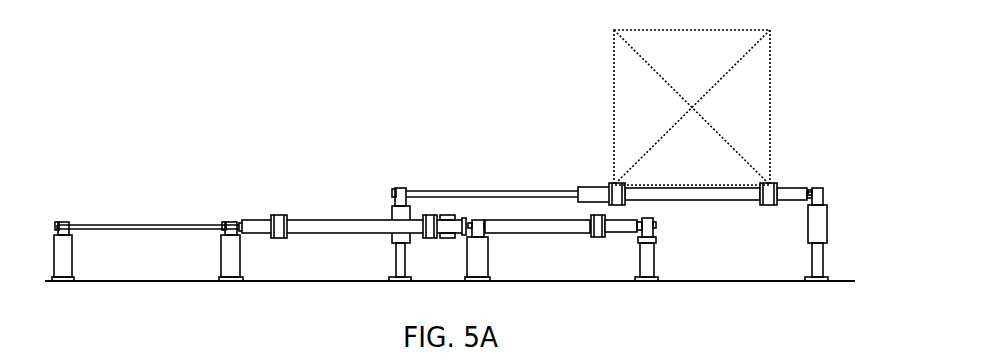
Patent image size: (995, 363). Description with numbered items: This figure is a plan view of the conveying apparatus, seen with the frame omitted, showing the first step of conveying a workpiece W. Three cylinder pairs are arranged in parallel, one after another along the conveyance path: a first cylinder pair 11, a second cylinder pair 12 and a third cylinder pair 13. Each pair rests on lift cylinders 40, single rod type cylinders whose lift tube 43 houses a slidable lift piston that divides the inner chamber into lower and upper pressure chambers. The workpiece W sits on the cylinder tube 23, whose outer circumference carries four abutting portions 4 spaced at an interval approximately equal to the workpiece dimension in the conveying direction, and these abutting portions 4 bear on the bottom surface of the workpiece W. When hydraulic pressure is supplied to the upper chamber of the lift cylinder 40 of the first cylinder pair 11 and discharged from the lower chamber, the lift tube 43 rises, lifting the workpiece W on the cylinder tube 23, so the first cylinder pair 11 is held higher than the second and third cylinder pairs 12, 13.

The abutting portion 4 is at (620, 197).
The first cylinder pair 11 is at (799, 162).
The second cylinder pair 12 is at (512, 211).
The third cylinder pair 13 is at (316, 212).
The cylinder tube 23 is at (593, 186).
The lift cylinder 40 is at (75, 265).
The lift tube 43 is at (72, 251).
The workpiece W is at (770, 55).